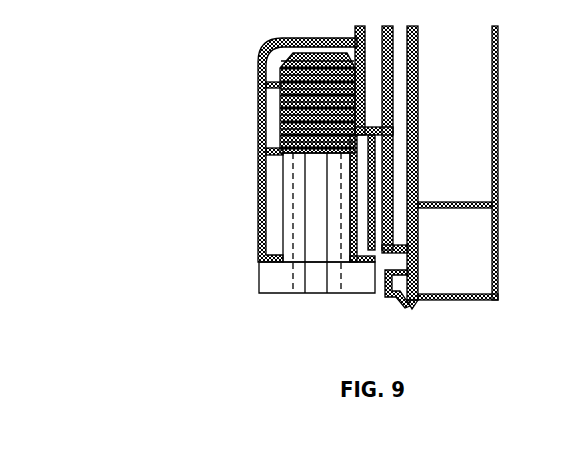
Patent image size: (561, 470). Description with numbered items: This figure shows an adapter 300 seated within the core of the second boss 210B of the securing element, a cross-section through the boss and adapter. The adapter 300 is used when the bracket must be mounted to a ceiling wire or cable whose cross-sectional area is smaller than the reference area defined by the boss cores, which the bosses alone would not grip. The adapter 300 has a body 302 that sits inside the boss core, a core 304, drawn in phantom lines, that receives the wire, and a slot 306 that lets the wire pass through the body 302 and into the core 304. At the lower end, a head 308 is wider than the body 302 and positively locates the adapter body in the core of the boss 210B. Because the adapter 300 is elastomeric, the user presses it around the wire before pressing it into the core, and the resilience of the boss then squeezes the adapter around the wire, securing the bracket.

The second boss 210B is at (276, 173).
The adapter 300 is at (285, 317).
The body 302 is at (299, 245).
The core 304 is at (292, 202).
The slot 306 is at (318, 236).
The head 308 is at (357, 285).